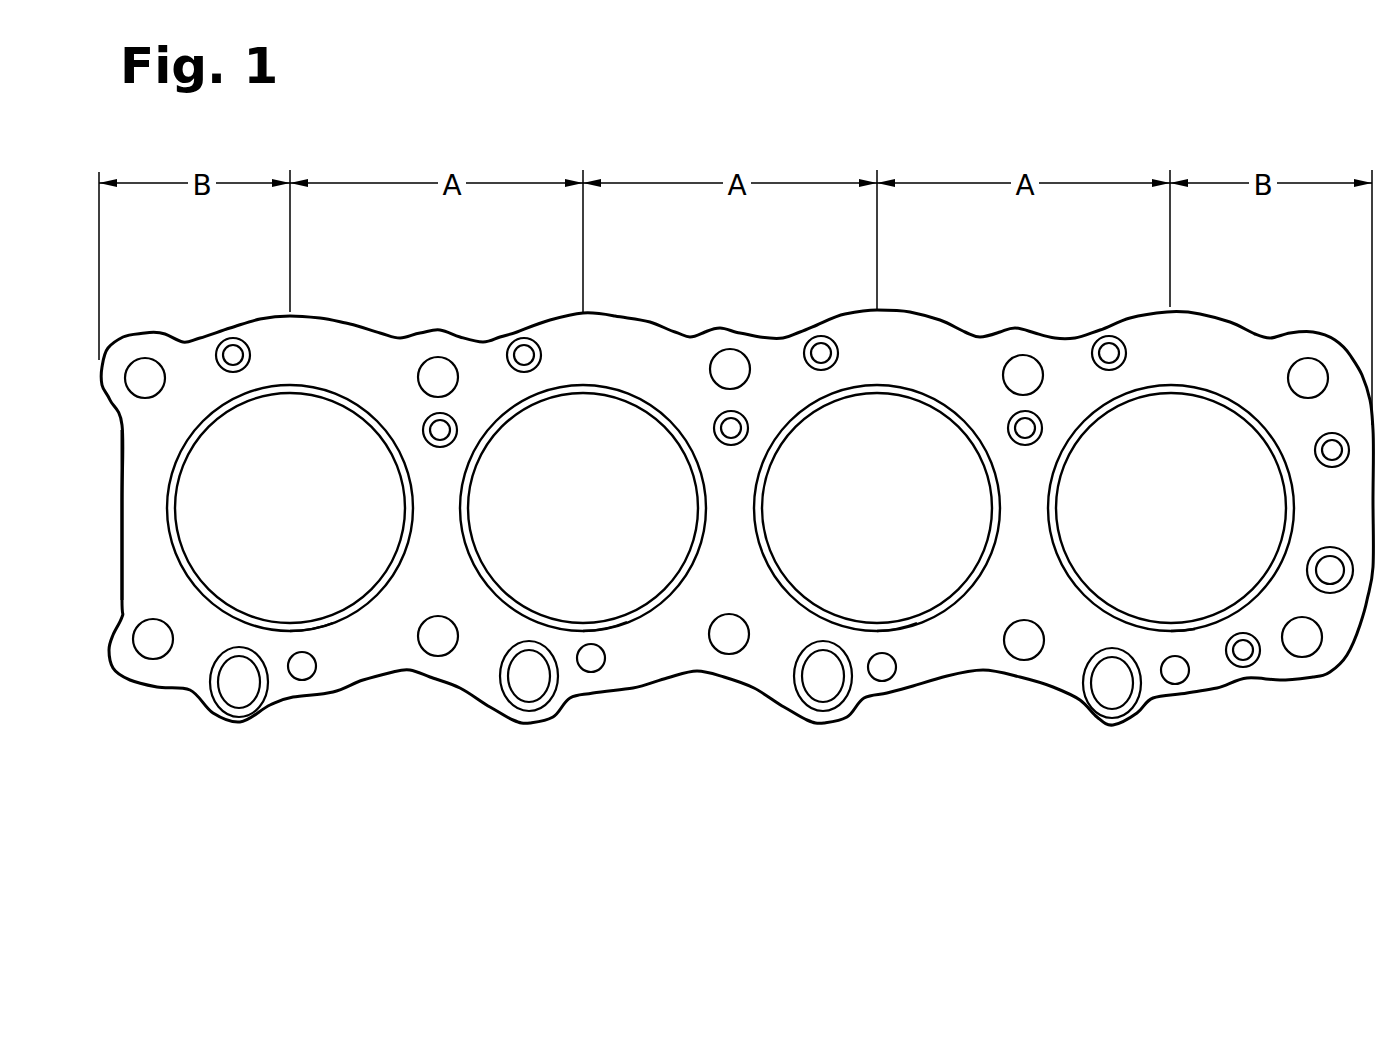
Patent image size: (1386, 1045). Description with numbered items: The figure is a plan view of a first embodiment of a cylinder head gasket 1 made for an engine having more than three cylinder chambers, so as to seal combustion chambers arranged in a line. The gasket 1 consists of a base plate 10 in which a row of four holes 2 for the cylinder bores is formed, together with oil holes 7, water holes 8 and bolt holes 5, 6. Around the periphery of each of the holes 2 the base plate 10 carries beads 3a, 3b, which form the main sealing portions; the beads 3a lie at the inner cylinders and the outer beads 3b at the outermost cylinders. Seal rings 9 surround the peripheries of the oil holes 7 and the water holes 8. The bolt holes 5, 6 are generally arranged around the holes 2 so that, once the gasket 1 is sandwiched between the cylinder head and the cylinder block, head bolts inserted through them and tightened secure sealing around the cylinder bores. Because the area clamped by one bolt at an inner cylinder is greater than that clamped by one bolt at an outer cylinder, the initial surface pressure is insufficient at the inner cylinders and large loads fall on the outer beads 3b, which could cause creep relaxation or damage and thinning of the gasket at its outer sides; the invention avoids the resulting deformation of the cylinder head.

The cylinder head gasket 1 is at (437, 705).
The holes for cylinder bores 2 is at (730, 508).
The beads 3a is at (917, 633).
The outer beads 3b is at (1195, 638).
The bolt holes 5 is at (751, 494).
The bolt holes 6 is at (705, 499).
The oil holes 7 is at (547, 700).
The water holes 8 is at (1243, 652).
The seal rings 9 is at (756, 724).
The base plate 10 is at (143, 552).